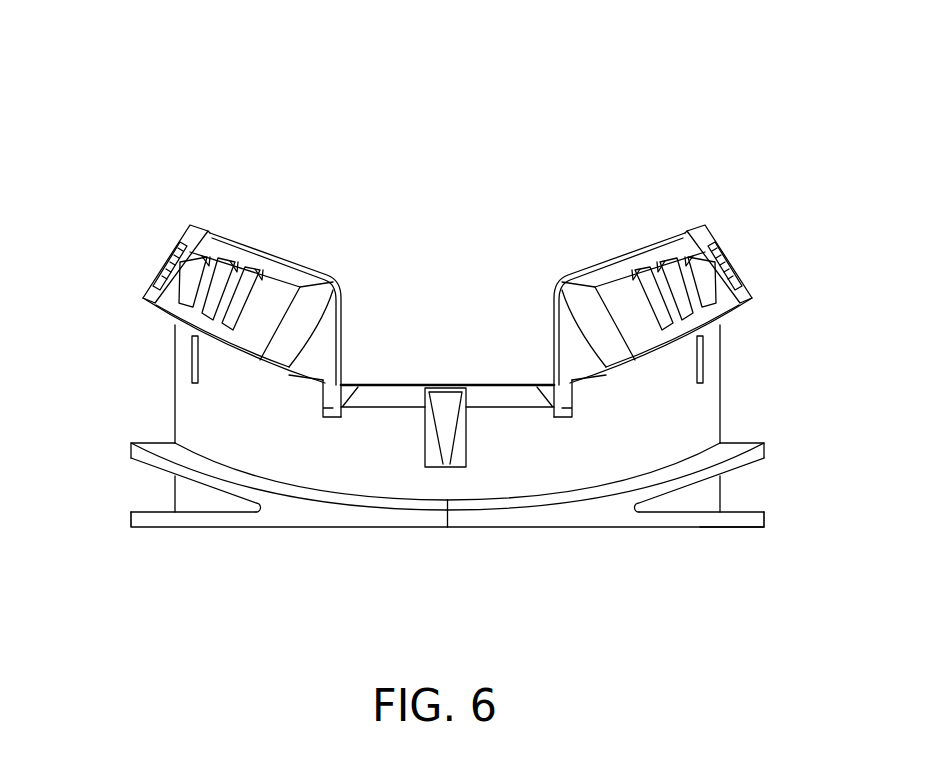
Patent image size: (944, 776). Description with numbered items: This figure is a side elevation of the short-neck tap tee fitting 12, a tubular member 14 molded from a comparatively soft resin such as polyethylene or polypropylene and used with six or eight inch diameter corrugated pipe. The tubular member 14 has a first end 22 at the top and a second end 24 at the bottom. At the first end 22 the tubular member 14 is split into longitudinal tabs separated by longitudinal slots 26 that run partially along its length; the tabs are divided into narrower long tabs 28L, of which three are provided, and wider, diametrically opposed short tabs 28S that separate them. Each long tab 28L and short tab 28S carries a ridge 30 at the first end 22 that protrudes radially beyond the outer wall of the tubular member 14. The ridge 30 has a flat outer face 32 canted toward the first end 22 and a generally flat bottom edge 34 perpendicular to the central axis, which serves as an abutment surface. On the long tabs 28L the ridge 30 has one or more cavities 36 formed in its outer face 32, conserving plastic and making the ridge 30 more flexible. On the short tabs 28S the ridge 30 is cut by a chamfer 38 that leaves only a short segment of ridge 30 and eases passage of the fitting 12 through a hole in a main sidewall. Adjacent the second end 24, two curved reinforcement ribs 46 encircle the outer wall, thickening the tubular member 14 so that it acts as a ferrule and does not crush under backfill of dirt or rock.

The short-neck tap tee fitting 12 is at (667, 152).
The tubular member 14 is at (733, 392).
The first end 22 is at (300, 246).
The second end 24 is at (319, 552).
The longitudinal slots 26 is at (700, 365).
The long tabs 28L is at (647, 245).
The short tabs 28S is at (490, 385).
The ridge 30 is at (241, 244).
The outer face 32 is at (183, 316).
The bottom edge 34 is at (200, 336).
The cavities 36 is at (190, 283).
The chamfer 38 is at (387, 397).
The curved reinforcement rib 46 is at (767, 518).